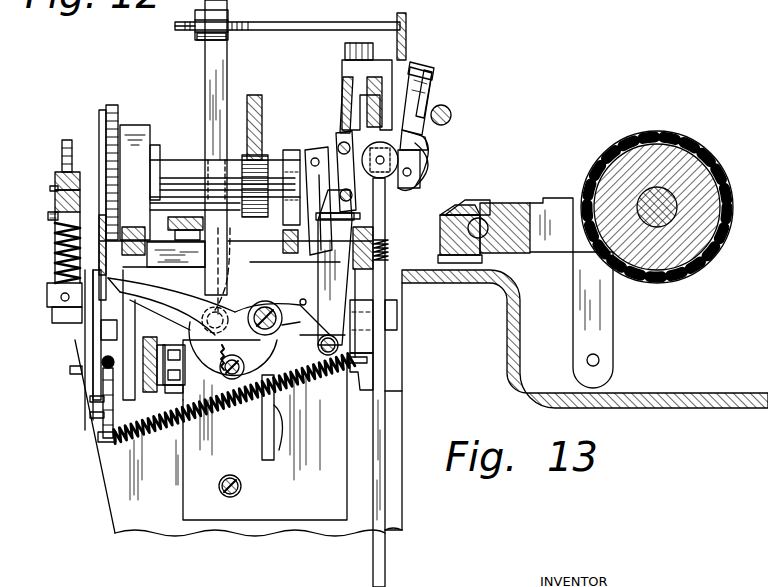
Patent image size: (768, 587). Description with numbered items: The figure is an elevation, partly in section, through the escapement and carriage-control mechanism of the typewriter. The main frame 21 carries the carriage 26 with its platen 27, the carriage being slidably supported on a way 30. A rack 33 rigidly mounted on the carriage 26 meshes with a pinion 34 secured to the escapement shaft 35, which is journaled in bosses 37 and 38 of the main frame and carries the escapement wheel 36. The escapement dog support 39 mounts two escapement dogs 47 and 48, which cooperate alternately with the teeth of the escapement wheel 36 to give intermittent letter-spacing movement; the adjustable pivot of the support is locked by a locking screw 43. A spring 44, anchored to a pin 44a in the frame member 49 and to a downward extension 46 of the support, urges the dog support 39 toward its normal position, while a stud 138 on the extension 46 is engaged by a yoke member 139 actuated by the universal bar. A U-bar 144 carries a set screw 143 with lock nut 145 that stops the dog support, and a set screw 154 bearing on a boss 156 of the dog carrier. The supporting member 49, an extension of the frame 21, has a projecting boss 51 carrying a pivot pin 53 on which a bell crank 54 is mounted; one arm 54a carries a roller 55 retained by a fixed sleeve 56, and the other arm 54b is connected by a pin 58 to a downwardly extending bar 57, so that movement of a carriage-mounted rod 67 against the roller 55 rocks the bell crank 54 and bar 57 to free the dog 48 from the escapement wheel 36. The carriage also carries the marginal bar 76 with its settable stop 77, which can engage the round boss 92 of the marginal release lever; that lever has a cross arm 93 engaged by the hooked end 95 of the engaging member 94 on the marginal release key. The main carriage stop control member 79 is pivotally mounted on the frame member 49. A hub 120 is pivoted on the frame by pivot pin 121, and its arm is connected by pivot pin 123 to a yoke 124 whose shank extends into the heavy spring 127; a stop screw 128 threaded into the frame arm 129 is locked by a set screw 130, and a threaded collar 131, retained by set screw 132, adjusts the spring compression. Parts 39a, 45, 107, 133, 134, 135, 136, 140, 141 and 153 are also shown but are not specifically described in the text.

The main frame 21 is at (509, 360).
The carriage 26 is at (515, 200).
The platen 27 is at (614, 160).
The way 30 is at (468, 188).
The rack 33 is at (257, 97).
The pinion 34 is at (262, 224).
The escapement shaft 35 is at (197, 148).
The escapement wheel 36 is at (118, 105).
The boss 37 is at (291, 150).
The boss 38 is at (138, 128).
The escapement dog support 39 is at (101, 365).
The pin head 39a is at (112, 337).
The locking screw 43 is at (72, 374).
The spring 44 is at (218, 412).
The pin 44a is at (402, 391).
The lever 45 is at (100, 333).
The downward extension 46 is at (100, 438).
The escapement dog 47 is at (102, 200).
The escapement dog 48 is at (122, 284).
The supporting member 49 is at (388, 236).
The projecting boss 51 is at (412, 173).
The pivot pin 53 is at (421, 165).
The bell crank 54 is at (405, 112).
The arm of bell crank 54a is at (424, 142).
The arm of bell crank 54b is at (340, 133).
The roller 55 is at (430, 90).
The fixed sleeve 56 is at (434, 70).
The bar 57 is at (325, 275).
The pin 58 is at (318, 148).
The rod 67 is at (446, 108).
The marginal rack 76 is at (400, 75).
The settable stop 77 is at (350, 65).
The main carriage stop control member 79 is at (386, 349).
The round boss 92 is at (345, 92).
The cross arm 93 is at (344, 380).
The engaging member 94 is at (262, 440).
The hooked end 95 is at (292, 330).
The pivot 107 is at (392, 195).
The hub 120 is at (288, 281).
The pivot pin 121 is at (224, 270).
The pivot pin 123 is at (62, 300).
The yoke 124 is at (47, 288).
The spring 127 is at (55, 258).
The stop screw 128 is at (67, 140).
The arm of the frame 129 is at (55, 178).
The set screw 130 is at (50, 189).
The threaded collar 131 is at (55, 222).
The set screw 132 is at (48, 216).
The bar 133 is at (222, 70).
The block 134 is at (200, 40).
The rod 135 is at (300, 22).
The stop 136 is at (406, 40).
The stud 138 is at (90, 415).
The yoke member 139 is at (138, 430).
The screw 140 is at (236, 378).
The screw 141 is at (249, 484).
The set screw 143 is at (160, 340).
The U-bar 144 is at (140, 337).
The lock nut 145 is at (165, 315).
The block 153 is at (182, 372).
The set screw 154 is at (178, 388).
The boss 156 is at (90, 399).